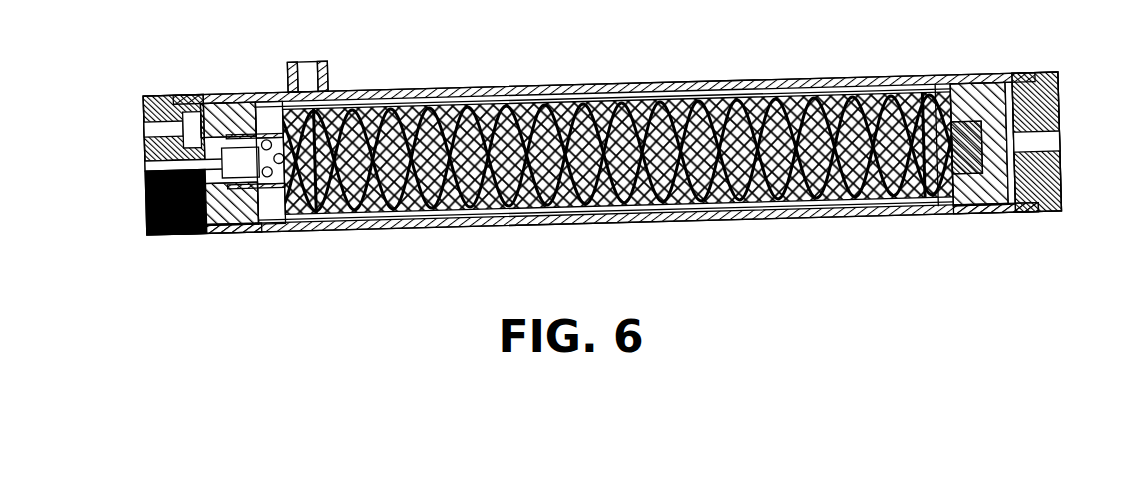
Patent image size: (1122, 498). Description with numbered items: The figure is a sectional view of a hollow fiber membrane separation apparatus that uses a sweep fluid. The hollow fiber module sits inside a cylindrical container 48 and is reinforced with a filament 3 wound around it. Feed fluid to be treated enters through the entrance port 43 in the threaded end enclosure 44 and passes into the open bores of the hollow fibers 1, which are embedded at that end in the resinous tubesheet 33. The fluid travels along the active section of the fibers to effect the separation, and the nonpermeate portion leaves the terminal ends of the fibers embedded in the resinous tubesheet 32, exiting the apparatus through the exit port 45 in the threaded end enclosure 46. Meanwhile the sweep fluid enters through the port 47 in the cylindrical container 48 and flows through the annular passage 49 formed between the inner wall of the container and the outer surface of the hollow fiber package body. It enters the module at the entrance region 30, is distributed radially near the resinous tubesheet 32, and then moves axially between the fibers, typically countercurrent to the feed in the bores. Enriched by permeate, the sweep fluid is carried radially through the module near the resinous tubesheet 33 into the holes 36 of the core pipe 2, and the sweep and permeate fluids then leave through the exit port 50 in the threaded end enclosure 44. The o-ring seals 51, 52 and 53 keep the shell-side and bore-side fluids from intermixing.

The hollow fibers 1 is at (653, 213).
The core pipe 2 is at (243, 230).
The filament 3 is at (486, 212).
The entrance region 30 is at (936, 88).
The resinous tubesheet 32 is at (957, 79).
The resinous tubesheet 33 is at (229, 96).
The holes 36 is at (279, 167).
The entrance port 43 is at (146, 130).
The threaded end enclosure 44 is at (150, 179).
The exit port 45 is at (1059, 142).
The threaded end enclosure 46 is at (1059, 182).
The port 47 is at (307, 67).
The cylindrical container 48 is at (670, 85).
The annular passage 49 is at (530, 90).
The exit port 50 is at (150, 164).
The o-ring seal 51 is at (147, 211).
The o-ring seal 52 is at (222, 233).
The o-ring seal 53 is at (984, 210).